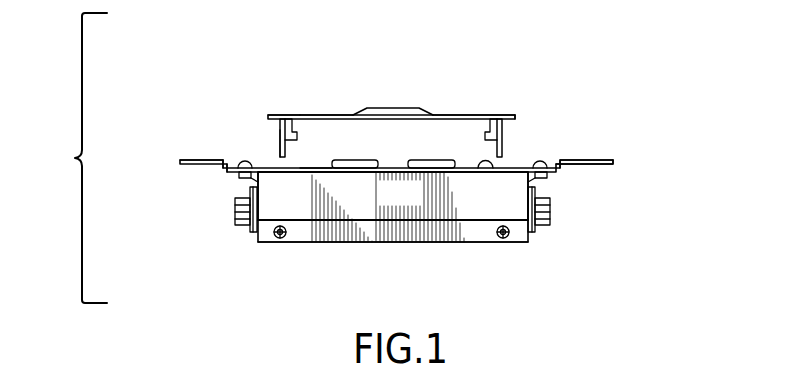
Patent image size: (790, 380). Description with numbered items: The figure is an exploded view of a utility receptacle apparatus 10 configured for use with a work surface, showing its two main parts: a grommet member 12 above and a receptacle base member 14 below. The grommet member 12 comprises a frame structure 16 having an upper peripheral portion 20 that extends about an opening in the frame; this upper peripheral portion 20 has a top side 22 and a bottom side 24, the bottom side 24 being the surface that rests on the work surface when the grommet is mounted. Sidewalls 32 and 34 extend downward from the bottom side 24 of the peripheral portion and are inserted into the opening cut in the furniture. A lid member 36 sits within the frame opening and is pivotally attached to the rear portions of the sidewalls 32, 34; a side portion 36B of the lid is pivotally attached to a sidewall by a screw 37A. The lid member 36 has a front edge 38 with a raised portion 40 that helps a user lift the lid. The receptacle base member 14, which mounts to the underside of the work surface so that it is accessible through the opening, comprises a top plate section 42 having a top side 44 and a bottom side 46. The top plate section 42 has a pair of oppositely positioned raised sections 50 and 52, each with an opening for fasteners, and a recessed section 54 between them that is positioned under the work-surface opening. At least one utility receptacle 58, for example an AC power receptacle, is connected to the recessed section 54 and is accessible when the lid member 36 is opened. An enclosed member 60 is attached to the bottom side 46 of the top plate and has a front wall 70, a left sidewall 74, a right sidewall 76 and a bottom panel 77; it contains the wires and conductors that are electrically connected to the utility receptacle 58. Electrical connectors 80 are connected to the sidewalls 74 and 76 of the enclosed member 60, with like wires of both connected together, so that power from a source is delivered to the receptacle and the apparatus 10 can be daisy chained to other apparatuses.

The utility receptacle apparatus 10 is at (74, 158).
The grommet member 12 is at (492, 115).
The receptacle base member 14 is at (442, 233).
The frame structure 16 is at (503, 152).
The upper peripheral portion 20 is at (268, 115).
The top side 22 is at (512, 119).
The bottom side 24 is at (508, 130).
The sidewall 32 is at (570, 160).
The sidewall 34 is at (280, 137).
The lid member 36 is at (323, 114).
The side portion 36B is at (292, 128).
The screw 37A is at (476, 128).
The front edge 38 is at (460, 113).
The raised portion 40 is at (397, 107).
The top plate section 42 is at (490, 172).
The top side 44 is at (613, 160).
The bottom side 46 is at (212, 172).
The raised section 50 is at (200, 160).
The raised section 52 is at (614, 161).
The recessed section 54 is at (312, 167).
The utility receptacle 58 is at (422, 160).
The enclosed member 60 is at (308, 232).
The front wall 70 is at (345, 202).
The left sidewall 74 is at (532, 181).
The right sidewall 76 is at (250, 182).
The bottom panel 77 is at (493, 243).
The electrical connector 80 is at (247, 230).